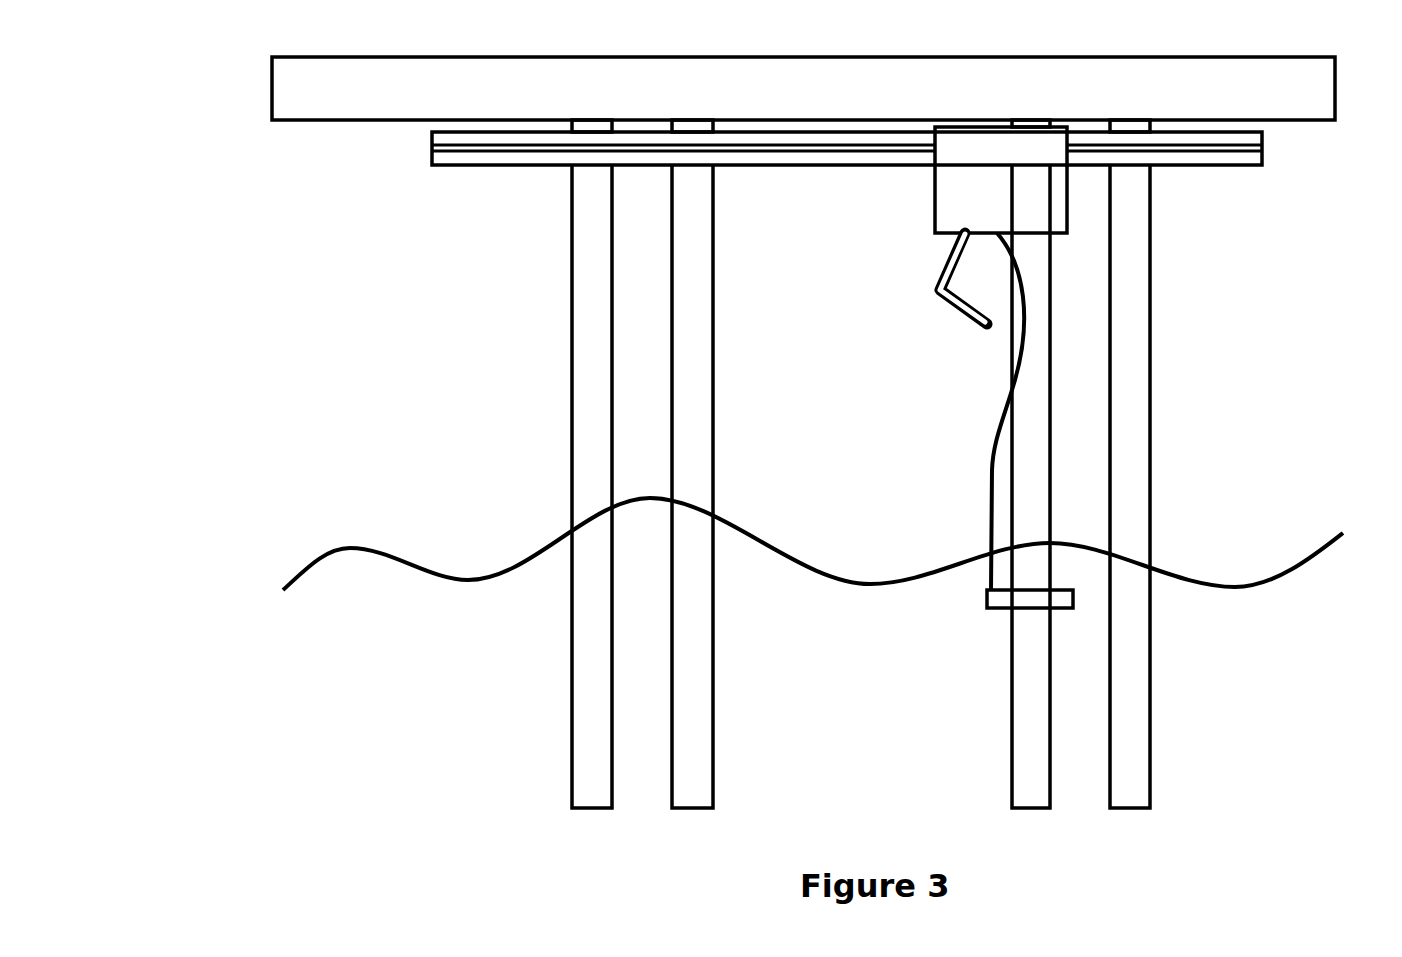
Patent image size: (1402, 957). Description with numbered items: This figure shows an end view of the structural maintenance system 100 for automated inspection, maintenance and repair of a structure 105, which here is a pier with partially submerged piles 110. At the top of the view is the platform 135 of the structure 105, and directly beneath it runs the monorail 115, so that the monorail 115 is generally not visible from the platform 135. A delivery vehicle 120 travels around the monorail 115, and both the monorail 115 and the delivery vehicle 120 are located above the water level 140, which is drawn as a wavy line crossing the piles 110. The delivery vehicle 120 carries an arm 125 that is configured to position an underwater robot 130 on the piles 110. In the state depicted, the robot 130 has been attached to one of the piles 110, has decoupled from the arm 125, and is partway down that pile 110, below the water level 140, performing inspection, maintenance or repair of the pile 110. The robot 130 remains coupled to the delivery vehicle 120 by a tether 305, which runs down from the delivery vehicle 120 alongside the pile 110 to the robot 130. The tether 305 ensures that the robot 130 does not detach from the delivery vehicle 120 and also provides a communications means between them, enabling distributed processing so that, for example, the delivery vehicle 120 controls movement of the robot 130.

The structural maintenance system 100 is at (254, 215).
The structure 105 is at (1208, 361).
The pile 110 is at (717, 455).
The monorail 115 is at (1240, 170).
The delivery vehicle 120 is at (932, 208).
The arm 125 is at (950, 314).
The underwater robot 130 is at (984, 598).
The platform 135 is at (1010, 52).
The water level 140 is at (780, 555).
The tether 305 is at (990, 451).